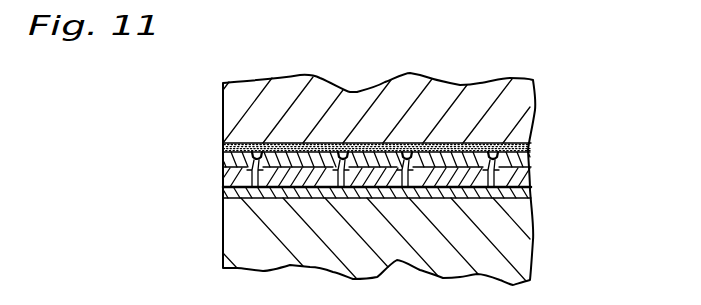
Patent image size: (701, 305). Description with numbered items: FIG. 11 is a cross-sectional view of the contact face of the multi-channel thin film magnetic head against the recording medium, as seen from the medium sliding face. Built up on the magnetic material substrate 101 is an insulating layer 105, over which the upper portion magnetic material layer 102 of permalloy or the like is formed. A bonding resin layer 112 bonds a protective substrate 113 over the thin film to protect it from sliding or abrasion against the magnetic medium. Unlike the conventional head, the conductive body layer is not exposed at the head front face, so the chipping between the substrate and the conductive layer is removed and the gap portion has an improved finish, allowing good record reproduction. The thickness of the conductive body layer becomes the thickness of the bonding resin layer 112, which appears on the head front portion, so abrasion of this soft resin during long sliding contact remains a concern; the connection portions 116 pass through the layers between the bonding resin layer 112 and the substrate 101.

The protective substrate 113 is at (505, 103).
The bonding resin layer 112 is at (525, 142).
The upper portion magnetic material layer 102 is at (515, 180).
The insulating layer 105 is at (522, 193).
The magnetic material substrate 101 is at (508, 244).
The via connection 116 is at (402, 167).